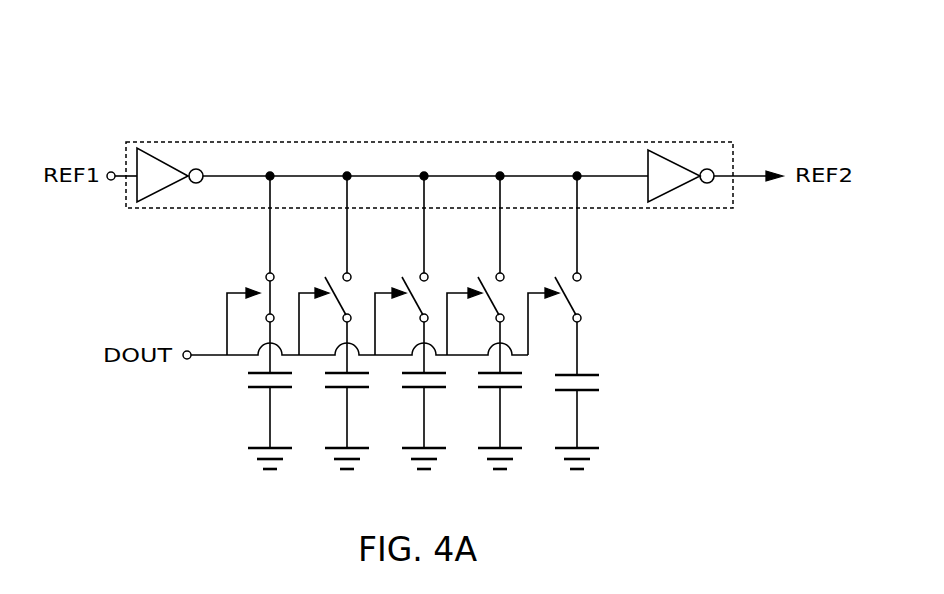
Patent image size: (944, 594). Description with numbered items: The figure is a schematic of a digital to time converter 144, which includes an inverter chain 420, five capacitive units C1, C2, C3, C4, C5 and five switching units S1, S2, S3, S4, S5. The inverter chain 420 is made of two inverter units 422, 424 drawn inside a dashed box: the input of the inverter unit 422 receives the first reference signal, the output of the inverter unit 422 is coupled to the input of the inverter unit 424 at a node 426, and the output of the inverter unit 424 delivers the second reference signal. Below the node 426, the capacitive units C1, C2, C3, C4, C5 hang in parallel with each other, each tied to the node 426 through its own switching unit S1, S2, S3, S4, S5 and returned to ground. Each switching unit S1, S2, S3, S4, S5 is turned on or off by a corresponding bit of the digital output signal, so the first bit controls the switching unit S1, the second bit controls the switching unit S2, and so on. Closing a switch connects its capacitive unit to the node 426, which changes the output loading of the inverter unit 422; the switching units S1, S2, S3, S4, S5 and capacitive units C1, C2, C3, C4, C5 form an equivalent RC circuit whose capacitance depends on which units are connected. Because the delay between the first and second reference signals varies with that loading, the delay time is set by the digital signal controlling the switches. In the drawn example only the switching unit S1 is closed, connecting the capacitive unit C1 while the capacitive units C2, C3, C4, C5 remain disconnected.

The digital to time converter 144 is at (98, 72).
The inverter chain 420 is at (492, 142).
The inverter unit 422 is at (155, 157).
The inverter unit 424 is at (678, 161).
The node 426 is at (270, 174).
The switching unit S1 is at (274, 275).
The switching unit S2 is at (351, 275).
The switching unit S3 is at (428, 275).
The switching unit S4 is at (504, 275).
The switching unit S5 is at (581, 275).
The capacitive unit C1 is at (261, 395).
The capacitive unit C2 is at (338, 395).
The capacitive unit C3 is at (416, 395).
The capacitive unit C4 is at (492, 395).
The capacitive unit C5 is at (569, 395).